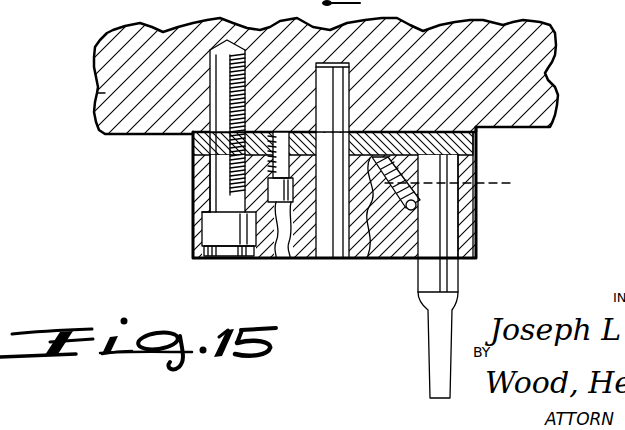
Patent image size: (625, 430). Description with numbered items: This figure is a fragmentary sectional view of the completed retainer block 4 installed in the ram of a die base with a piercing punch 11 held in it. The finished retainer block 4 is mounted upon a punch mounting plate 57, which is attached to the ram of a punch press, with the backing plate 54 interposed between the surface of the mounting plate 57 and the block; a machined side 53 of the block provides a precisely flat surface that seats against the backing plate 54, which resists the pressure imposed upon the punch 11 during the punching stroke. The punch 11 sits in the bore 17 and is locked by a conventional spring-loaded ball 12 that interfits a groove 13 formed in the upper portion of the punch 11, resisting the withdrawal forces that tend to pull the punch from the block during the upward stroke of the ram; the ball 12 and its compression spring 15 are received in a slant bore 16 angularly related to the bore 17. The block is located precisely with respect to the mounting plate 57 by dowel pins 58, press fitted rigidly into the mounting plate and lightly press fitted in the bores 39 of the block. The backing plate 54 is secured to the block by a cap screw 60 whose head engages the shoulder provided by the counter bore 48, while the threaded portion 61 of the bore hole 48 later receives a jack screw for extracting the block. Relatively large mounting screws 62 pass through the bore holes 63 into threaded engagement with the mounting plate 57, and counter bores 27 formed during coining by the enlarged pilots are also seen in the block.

The retainer block 4 is at (194, 232).
The piercing punch 11 is at (440, 283).
The spring-loaded ball 12 is at (414, 209).
The groove 13 is at (464, 186).
The compression spring 15 is at (460, 159).
The slant bore 16 is at (375, 258).
The bore 17 is at (480, 235).
The counter bore 27 is at (242, 258).
The bore 39 is at (343, 258).
The bore hole 48 is at (304, 258).
The machined side of the block 53 is at (193, 161).
The backing plate 54 is at (460, 143).
The punch mounting plate 57 is at (543, 73).
The dowel pin 58 is at (317, 80).
The cap screw 60 is at (291, 258).
The threaded portion 61 is at (250, 186).
The mounting screw 62 is at (222, 95).
The bore hole 63 is at (210, 202).